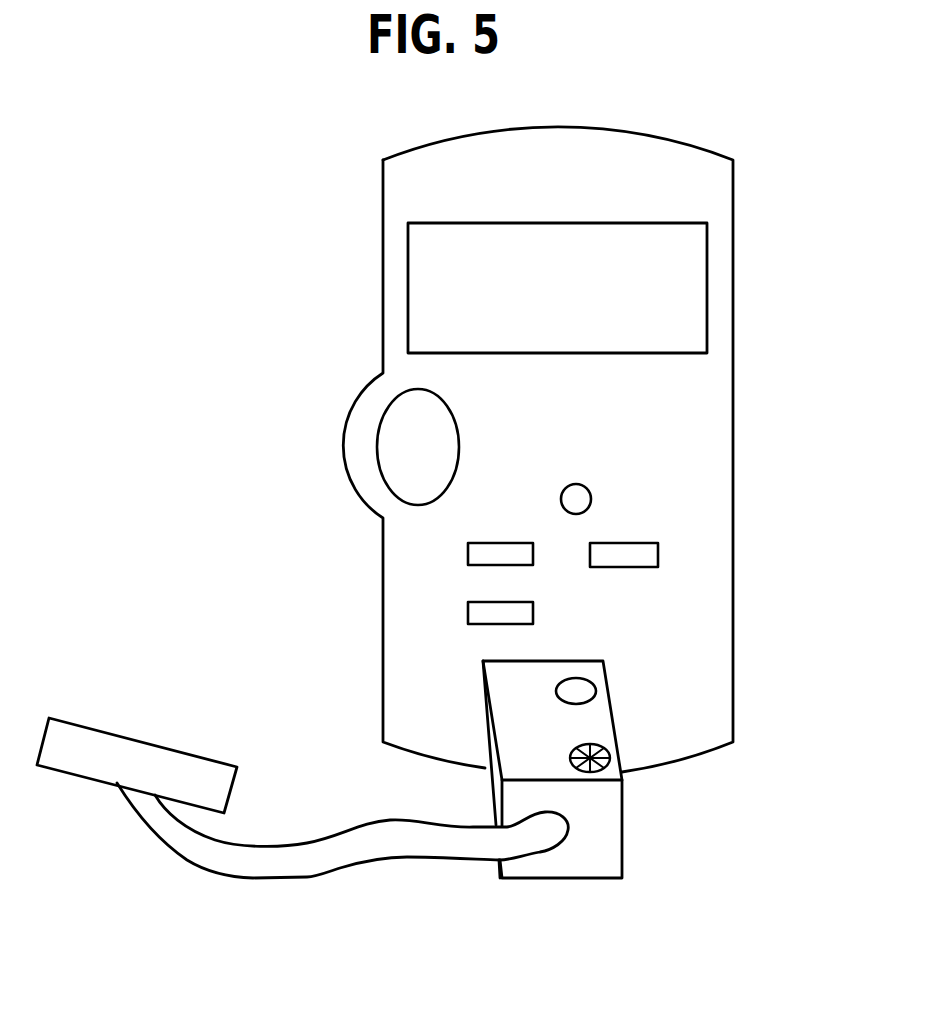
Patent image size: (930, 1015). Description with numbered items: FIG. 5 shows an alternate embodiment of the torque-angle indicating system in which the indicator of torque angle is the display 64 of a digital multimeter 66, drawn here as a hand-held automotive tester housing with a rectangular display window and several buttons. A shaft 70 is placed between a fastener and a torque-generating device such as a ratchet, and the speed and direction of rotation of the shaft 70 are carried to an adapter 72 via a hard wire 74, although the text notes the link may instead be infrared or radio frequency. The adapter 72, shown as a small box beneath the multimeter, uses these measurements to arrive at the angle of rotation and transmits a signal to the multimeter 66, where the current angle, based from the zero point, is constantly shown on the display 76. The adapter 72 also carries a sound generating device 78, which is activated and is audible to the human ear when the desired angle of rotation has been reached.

The digital multimeter 66 is at (642, 134).
The display 64 is at (707, 257).
The shaft 70 is at (130, 737).
The adapter 72 is at (613, 704).
The hard wire 74 is at (368, 868).
The display 76 is at (577, 678).
The sound generating device 78 is at (610, 752).